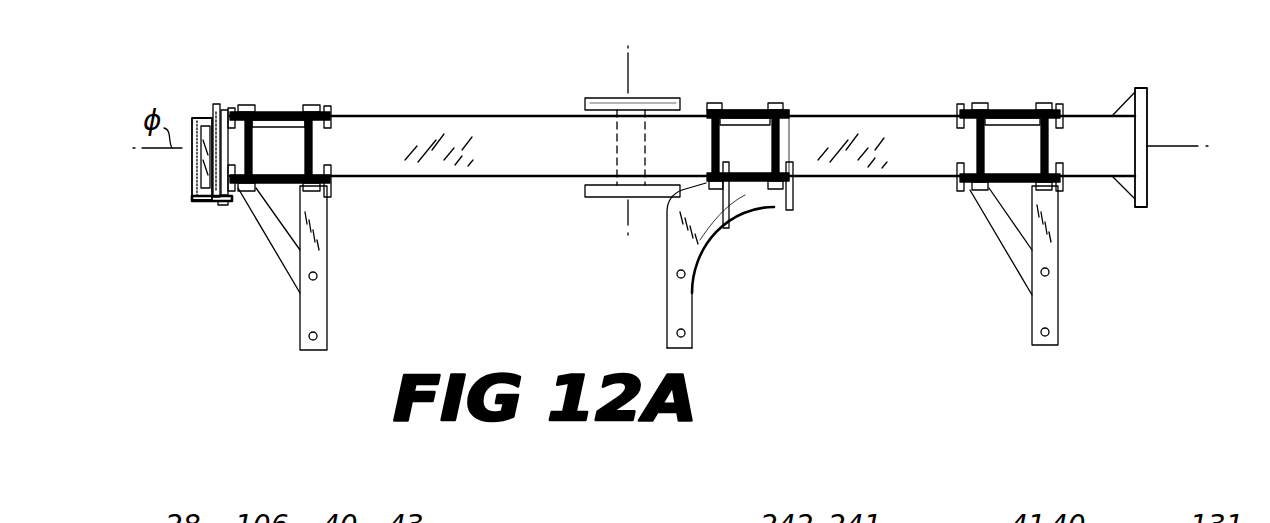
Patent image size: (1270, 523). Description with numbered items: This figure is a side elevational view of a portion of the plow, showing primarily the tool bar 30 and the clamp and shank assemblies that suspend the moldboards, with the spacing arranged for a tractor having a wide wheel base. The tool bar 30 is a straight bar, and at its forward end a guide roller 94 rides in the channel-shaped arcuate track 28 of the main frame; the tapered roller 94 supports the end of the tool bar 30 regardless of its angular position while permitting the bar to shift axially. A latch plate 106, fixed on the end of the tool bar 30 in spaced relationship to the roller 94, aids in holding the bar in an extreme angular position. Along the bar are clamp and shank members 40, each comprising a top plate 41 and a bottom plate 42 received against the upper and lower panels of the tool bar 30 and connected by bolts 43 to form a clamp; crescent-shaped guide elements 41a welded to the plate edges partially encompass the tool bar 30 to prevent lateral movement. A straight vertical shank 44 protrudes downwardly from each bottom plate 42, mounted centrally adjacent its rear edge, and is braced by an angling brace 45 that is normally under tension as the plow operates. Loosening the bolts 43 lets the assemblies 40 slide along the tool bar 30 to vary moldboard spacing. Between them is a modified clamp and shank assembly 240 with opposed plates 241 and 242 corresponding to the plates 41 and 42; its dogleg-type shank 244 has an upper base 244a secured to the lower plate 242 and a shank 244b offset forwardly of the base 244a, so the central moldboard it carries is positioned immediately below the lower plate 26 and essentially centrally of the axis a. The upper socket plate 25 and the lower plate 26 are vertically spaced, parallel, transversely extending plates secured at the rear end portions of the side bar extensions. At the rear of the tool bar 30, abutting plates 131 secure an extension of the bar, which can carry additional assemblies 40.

The upper transversely extending socket plate 25 is at (652, 98).
The lower transversely extending plate 26 is at (600, 197).
The arcuate track 28 is at (203, 117).
The tool bar 30 is at (445, 175).
The clamp and shank member 40 is at (333, 104).
The top plate 41 is at (278, 112).
The crescent-shaped guide element 41a is at (333, 115).
The bottom plate 42 is at (283, 202).
The bolts 43 is at (315, 146).
The vertical shank 44 is at (320, 298).
The angling brace 45 is at (288, 270).
The guide roller 94 is at (200, 188).
The latch plate 106 is at (219, 118).
The abutting plates 131 is at (1148, 108).
The modified clamp and shank assembly 240 is at (790, 105).
The upper plate 241 is at (747, 112).
The lower plate 242 is at (745, 187).
The dogleg-type shank 244 is at (667, 300).
The upper base 244a is at (772, 207).
The shank 244b is at (692, 300).
The axis a is at (627, 60).